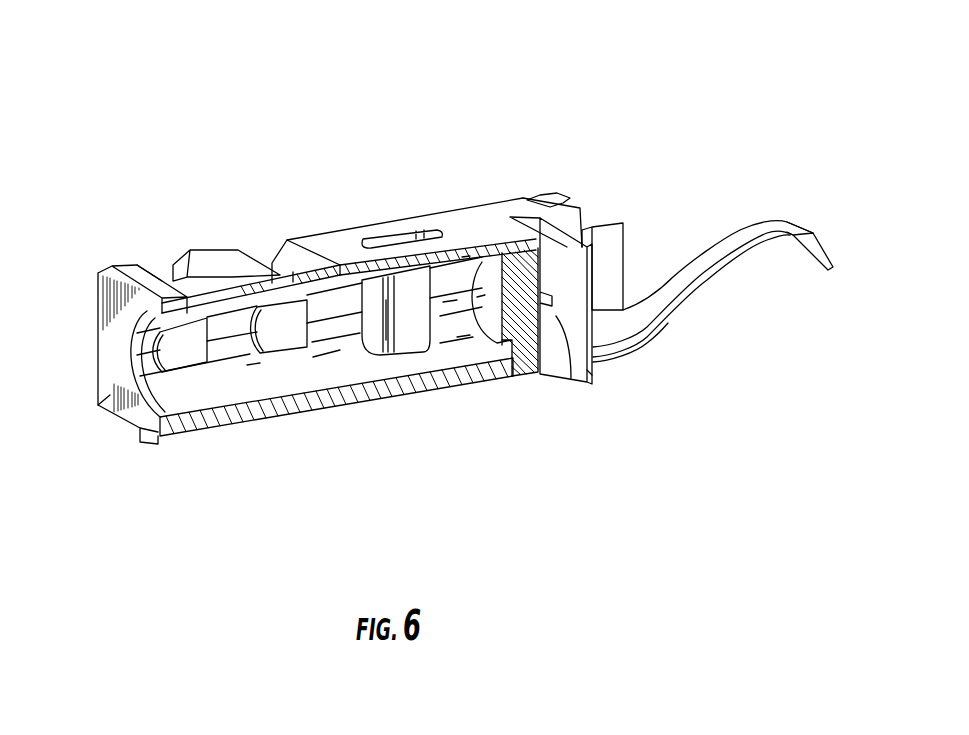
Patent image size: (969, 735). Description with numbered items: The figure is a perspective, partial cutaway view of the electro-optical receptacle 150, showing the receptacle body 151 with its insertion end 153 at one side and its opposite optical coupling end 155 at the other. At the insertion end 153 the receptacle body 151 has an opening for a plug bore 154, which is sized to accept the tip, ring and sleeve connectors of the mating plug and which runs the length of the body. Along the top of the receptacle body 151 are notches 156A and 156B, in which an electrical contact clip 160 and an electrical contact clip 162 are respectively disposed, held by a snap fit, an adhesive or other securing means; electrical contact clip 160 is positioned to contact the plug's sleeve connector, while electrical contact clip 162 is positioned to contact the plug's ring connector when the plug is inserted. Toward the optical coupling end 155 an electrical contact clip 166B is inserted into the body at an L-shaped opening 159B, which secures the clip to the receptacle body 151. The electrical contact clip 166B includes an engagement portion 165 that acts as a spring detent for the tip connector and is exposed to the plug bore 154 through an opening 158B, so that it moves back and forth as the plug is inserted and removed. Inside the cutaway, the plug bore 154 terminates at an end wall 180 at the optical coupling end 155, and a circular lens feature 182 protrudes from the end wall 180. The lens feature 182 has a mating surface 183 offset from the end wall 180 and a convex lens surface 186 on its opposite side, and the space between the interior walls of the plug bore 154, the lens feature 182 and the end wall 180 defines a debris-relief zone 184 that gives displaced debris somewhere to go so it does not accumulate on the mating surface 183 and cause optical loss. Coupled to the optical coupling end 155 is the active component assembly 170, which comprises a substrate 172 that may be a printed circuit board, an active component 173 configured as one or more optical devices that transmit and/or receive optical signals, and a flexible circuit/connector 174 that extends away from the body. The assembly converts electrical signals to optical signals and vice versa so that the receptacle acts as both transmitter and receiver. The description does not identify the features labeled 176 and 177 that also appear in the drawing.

The electro-optical receptacle 150 is at (313, 150).
The receptacle body 151 is at (130, 266).
The insertion end 153 is at (110, 395).
The plug bore 154 is at (194, 398).
The optical coupling end 155 is at (546, 140).
The notch 156A is at (166, 266).
The notch 156B is at (263, 243).
The opening 158B is at (416, 232).
The L-shaped opening 159B is at (545, 197).
The electrical contact clip 160 is at (211, 285).
The electrical contact clip 162 is at (297, 282).
The engagement portion 165 is at (412, 300).
The electrical contact clip 166B is at (390, 340).
The active component assembly 170 is at (686, 284).
The substrate 172 is at (593, 370).
The active component 173 is at (643, 313).
The flexible circuit/connector 174 is at (694, 303).
The contact tip 176 is at (203, 365).
The insert 177 is at (290, 356).
The end wall 180 is at (477, 240).
The lens feature 182 is at (527, 368).
The mating surface 183 is at (476, 262).
The debris-relief zone 184 is at (506, 355).
The convex lens surface 186 is at (571, 230).